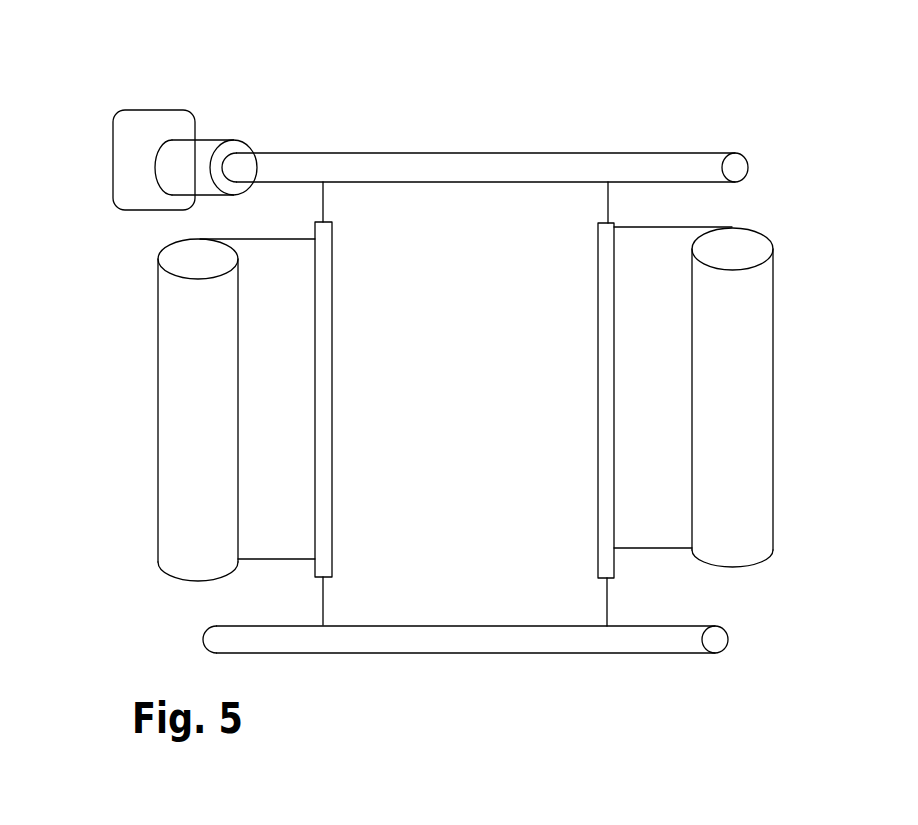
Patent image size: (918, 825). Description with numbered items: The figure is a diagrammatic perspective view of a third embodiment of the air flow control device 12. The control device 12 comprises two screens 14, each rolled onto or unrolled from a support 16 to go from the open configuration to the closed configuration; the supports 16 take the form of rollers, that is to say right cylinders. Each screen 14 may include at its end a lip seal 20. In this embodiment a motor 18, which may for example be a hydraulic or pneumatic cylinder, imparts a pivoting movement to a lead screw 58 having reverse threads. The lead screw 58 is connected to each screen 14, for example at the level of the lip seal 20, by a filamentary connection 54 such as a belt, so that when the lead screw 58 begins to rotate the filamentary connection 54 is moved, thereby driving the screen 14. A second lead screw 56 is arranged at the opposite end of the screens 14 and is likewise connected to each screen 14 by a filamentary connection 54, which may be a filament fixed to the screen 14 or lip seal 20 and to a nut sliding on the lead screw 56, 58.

The control device 12 is at (145, 305).
The screen 14 is at (277, 467).
The support 16 is at (210, 407).
The motor 18 is at (143, 132).
The lip seal 20 is at (323, 315).
The filamentary connection 54 is at (608, 203).
The second lead screw 56 is at (207, 148).
The lead screw 58 is at (415, 153).